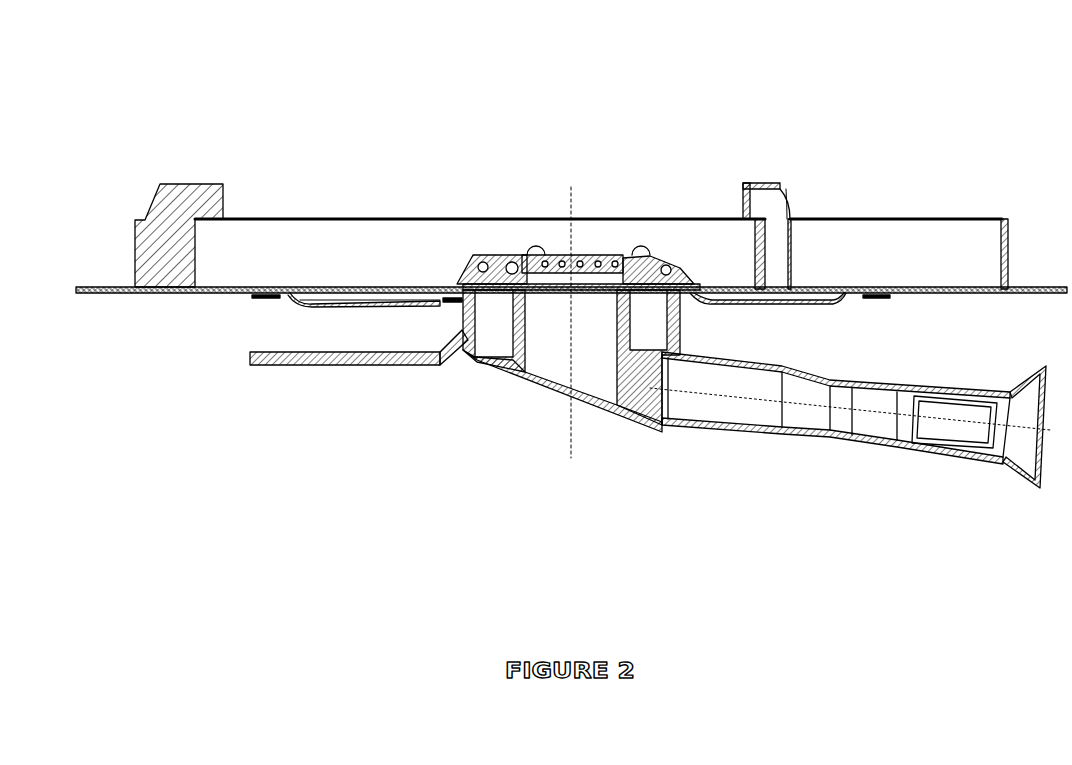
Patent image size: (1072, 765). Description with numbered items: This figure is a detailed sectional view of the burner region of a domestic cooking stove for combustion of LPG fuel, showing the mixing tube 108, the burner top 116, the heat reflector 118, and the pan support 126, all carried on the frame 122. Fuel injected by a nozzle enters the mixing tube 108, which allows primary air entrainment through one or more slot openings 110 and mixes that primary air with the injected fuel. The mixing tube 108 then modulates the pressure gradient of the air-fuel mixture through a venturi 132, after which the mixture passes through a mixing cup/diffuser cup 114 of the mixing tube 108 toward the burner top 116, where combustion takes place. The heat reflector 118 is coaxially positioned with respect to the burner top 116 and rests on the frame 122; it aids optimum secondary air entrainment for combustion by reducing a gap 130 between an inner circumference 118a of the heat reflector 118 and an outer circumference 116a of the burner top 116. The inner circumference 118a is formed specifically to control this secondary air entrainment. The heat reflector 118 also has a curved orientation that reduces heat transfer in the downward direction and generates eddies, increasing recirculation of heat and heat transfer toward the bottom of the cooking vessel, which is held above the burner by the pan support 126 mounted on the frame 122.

The mixing tube 108 is at (897, 490).
The slot openings 110 is at (975, 410).
The mixing cup/diffuser cup 114 is at (558, 348).
The burner top 116 is at (636, 258).
The outer circumference of the burner top 116a is at (470, 280).
The heat reflector 118 is at (345, 300).
The inner circumference of heat reflector 118a is at (383, 302).
The frame 122 is at (92, 287).
The pan support 126 is at (197, 184).
The gap 130 is at (448, 302).
The venturi 132 is at (820, 432).